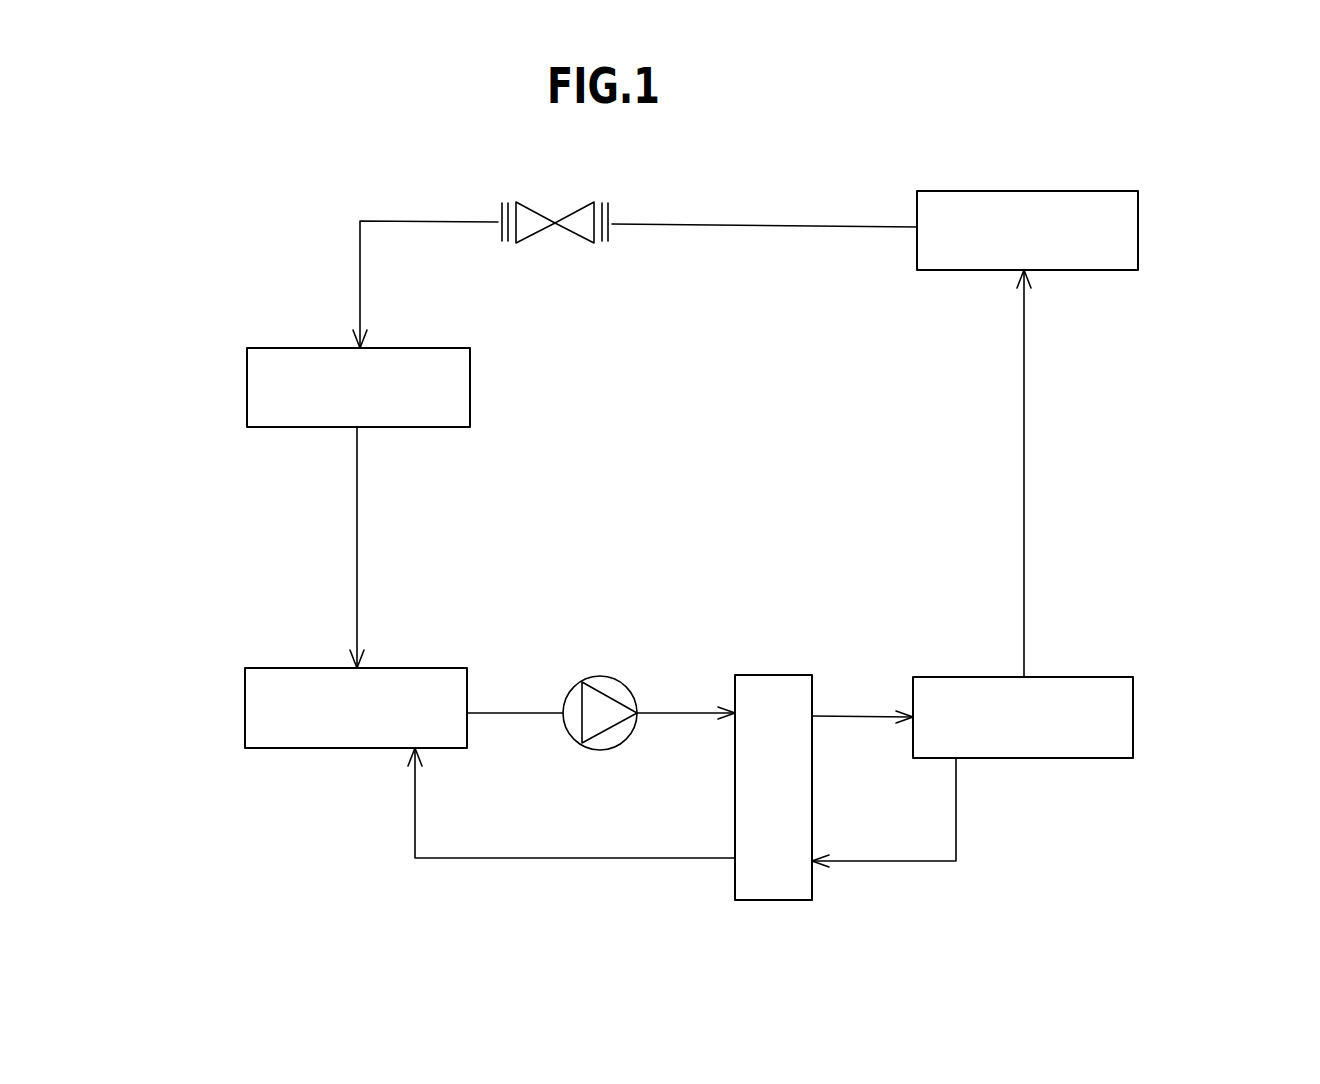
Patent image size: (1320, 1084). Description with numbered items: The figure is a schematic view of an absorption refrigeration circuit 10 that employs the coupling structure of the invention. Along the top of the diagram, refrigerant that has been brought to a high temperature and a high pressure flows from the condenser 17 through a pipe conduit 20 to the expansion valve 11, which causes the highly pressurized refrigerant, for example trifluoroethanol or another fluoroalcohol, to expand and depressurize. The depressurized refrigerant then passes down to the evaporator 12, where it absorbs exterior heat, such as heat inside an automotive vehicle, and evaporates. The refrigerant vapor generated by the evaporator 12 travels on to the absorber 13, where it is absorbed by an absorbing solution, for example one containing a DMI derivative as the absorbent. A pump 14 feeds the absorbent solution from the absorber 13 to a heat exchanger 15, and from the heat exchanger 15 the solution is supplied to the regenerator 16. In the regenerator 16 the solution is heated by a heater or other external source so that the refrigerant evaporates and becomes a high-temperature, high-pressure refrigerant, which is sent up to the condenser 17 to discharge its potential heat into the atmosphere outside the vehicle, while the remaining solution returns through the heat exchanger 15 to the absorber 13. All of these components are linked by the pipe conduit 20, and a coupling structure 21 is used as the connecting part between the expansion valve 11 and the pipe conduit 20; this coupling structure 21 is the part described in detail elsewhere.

The absorption refrigeration circuit 10 is at (793, 172).
The expansion valve 11 is at (537, 245).
The evaporator 12 is at (238, 382).
The absorber 13 is at (238, 708).
The pump 14 is at (597, 672).
The heat exchanger 15 is at (770, 673).
The regenerator 16 is at (1140, 716).
The condenser 17 is at (1145, 227).
The pipe conduit 20 is at (422, 218).
The coupling structure 21 is at (505, 254).